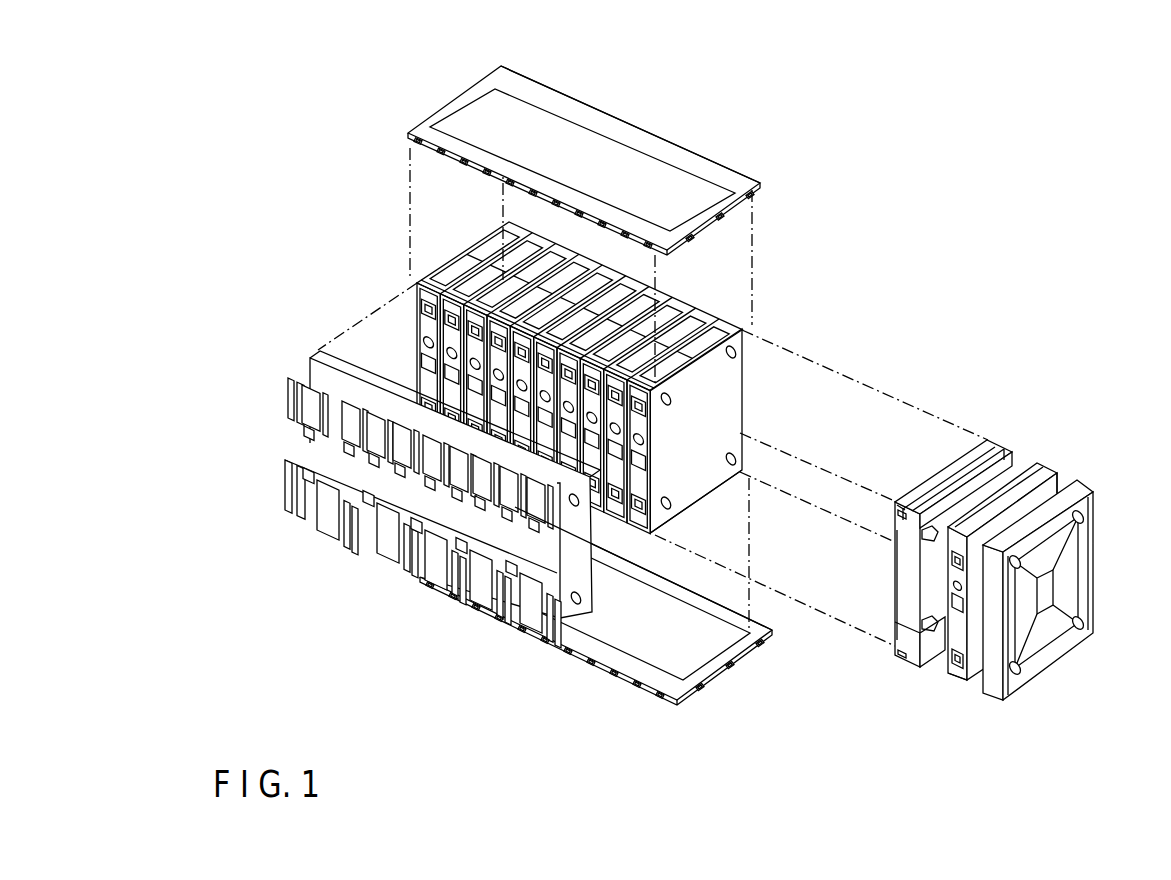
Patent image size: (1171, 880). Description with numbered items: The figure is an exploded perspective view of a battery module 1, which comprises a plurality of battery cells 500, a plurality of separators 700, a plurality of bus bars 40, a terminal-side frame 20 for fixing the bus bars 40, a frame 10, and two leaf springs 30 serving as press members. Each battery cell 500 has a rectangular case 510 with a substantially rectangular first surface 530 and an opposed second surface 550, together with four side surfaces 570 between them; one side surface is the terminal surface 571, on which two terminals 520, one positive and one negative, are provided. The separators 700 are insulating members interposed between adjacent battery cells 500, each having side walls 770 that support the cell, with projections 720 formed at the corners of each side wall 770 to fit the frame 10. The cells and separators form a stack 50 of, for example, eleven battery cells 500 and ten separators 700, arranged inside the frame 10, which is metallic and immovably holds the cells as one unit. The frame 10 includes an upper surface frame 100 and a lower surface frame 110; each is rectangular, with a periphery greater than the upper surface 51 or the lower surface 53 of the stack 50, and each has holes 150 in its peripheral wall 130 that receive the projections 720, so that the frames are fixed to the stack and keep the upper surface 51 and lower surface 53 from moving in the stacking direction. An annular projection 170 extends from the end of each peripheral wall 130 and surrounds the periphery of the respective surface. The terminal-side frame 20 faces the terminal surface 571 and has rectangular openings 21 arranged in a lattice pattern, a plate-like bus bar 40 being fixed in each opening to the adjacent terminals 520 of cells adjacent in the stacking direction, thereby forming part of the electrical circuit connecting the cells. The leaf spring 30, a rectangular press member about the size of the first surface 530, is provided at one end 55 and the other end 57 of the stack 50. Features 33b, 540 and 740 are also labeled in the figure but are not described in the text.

The battery module 1 is at (1010, 152).
The frame 10 is at (590, 88).
The terminal-side frame 20 is at (293, 350).
The rectangular openings 21 is at (316, 373).
The leaf spring 30 is at (1120, 482).
The electrode terminal 33b is at (647, 413).
The bus bar 40 is at (278, 410).
The stack 50 is at (772, 330).
The upper surface 51 is at (477, 255).
The lower surface 53 is at (700, 503).
The one end 55 is at (1057, 470).
The other end 57 is at (414, 284).
The upper surface frame 100 is at (663, 128).
The lower surface frame 110 is at (712, 688).
The peripheral wall 130 is at (758, 183).
The holes 150 is at (410, 146).
The annular projection 170 is at (516, 76).
The battery cell 500 is at (1047, 463).
The rectangular case 510 is at (1037, 467).
The terminals 520 is at (952, 680).
The first surface 530 is at (973, 667).
The fixing hole 540 is at (741, 353).
The second surface 550 is at (734, 413).
The side surfaces 570 is at (955, 682).
The terminal surface 571 is at (955, 665).
The separator 700 is at (995, 435).
The projections 720 is at (895, 517).
The engaging hook 740 is at (918, 533).
The side walls 770 is at (893, 567).